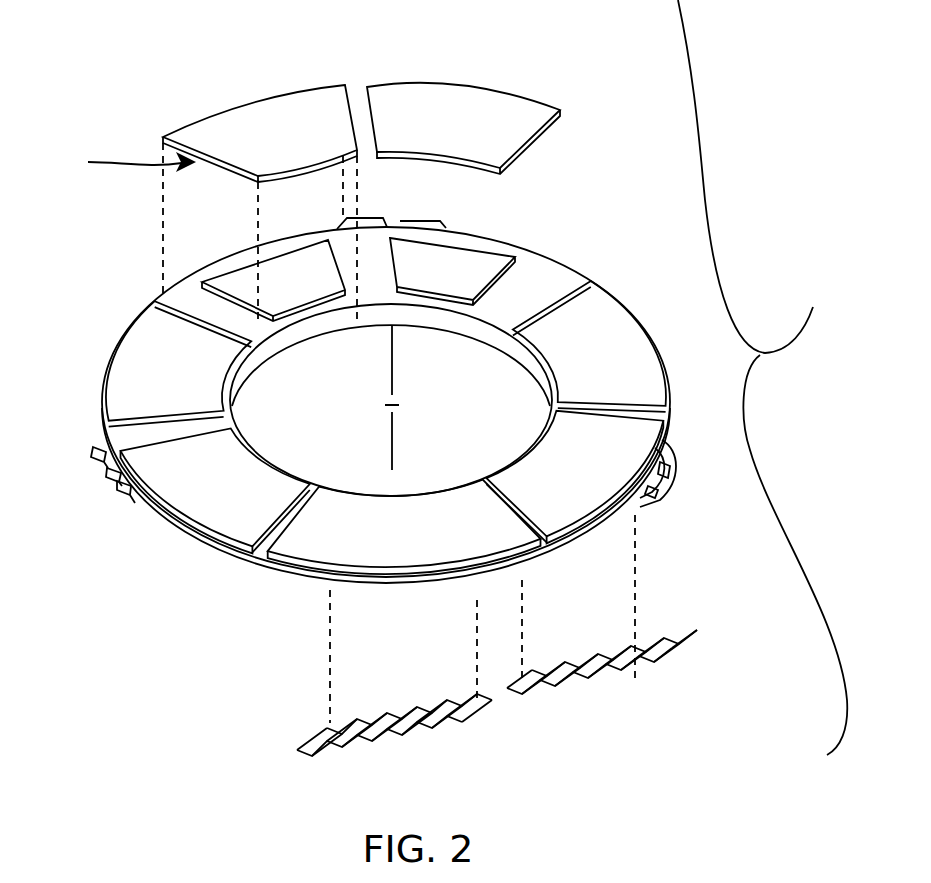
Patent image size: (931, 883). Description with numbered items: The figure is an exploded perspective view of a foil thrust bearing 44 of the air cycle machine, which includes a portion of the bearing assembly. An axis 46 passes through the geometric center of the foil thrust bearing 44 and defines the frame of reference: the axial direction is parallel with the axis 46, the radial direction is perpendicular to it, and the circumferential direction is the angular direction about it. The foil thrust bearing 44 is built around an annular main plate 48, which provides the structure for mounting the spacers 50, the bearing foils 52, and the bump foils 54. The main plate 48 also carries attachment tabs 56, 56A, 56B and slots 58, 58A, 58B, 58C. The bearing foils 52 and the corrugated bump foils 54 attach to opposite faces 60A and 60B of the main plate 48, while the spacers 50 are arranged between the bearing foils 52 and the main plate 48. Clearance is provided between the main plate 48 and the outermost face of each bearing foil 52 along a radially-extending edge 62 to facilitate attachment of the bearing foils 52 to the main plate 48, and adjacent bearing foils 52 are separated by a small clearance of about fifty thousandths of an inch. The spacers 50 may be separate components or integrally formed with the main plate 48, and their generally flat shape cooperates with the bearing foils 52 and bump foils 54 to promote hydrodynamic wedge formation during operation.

The foil thrust bearing 44 is at (762, 377).
The axis 46 is at (395, 447).
The main plate 48 is at (374, 298).
The spacers 50 is at (455, 260).
The bearing foils 52 is at (470, 88).
The bump foils 54 is at (618, 680).
The attachment tab 56 is at (650, 533).
The attachment tab 56A is at (323, 207).
The attachment tab 56B is at (117, 532).
The slot 58 is at (678, 437).
The slot 58A is at (425, 224).
The slot 58B is at (133, 505).
The slot 58C is at (97, 450).
The face 60A is at (537, 285).
The face 60B is at (395, 587).
The radially-extending edge 62 is at (124, 160).